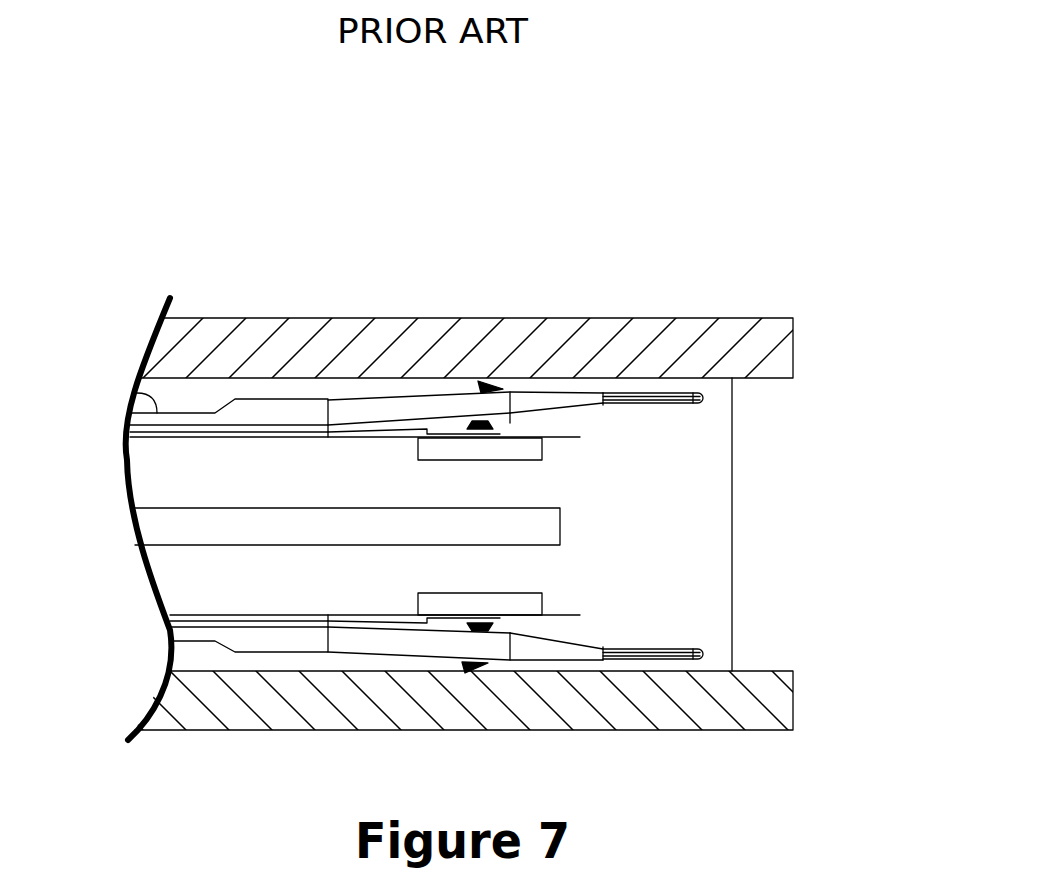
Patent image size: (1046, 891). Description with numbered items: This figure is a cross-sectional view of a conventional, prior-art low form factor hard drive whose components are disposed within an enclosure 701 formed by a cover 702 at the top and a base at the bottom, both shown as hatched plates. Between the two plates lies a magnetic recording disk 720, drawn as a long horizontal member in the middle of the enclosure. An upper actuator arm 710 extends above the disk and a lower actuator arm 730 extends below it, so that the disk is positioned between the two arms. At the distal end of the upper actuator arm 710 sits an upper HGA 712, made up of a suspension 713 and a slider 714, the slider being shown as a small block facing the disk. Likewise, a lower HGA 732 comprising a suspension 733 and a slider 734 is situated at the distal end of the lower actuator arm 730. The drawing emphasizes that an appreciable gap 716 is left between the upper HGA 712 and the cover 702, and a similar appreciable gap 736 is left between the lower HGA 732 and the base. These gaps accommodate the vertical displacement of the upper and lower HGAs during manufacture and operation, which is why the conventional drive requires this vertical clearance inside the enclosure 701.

The enclosure 701 is at (688, 278).
The cover 702 is at (312, 318).
The upper actuator arm 710 is at (150, 393).
The upper HGA 712 is at (664, 421).
The suspension 713 is at (580, 437).
The slider 714 is at (515, 461).
The gap 716 is at (480, 385).
The magnetic recording disk 720 is at (562, 527).
The lower actuator arm 730 is at (192, 614).
The lower HGA 732 is at (647, 626).
The suspension 733 is at (578, 615).
The slider 734 is at (492, 593).
The gap 736 is at (465, 668).